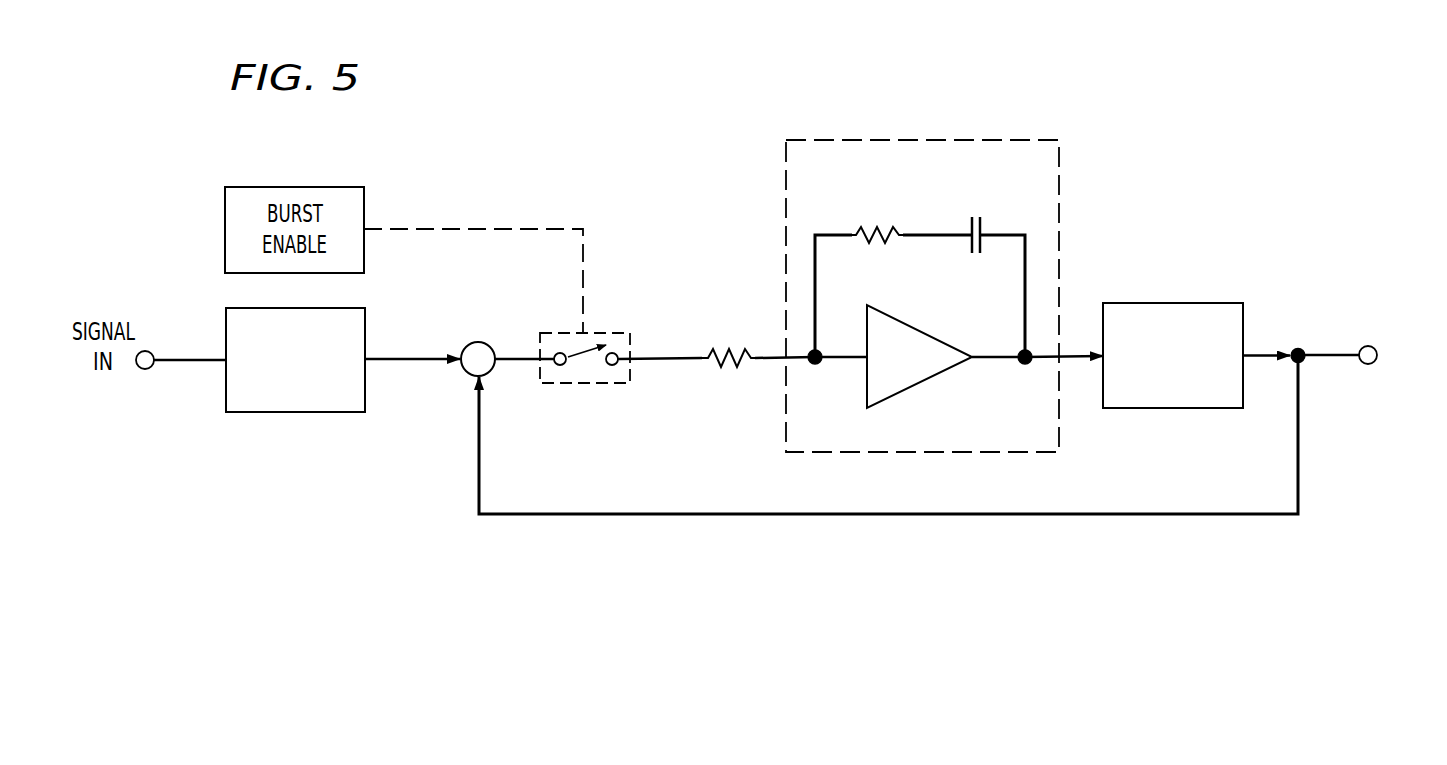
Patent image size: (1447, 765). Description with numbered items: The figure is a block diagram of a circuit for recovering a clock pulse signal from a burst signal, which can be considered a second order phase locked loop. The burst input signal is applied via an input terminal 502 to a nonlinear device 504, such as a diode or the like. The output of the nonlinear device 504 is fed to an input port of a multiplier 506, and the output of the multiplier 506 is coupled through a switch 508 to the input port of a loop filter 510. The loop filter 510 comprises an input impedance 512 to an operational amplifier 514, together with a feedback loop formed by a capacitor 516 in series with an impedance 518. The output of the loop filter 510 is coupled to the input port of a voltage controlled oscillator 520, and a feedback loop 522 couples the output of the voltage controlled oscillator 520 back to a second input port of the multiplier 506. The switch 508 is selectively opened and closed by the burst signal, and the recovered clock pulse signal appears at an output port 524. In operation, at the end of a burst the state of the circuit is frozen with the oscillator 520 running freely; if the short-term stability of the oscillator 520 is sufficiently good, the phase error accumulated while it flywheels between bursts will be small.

The input terminal 502 is at (150, 370).
The nonlinear device 504 is at (305, 412).
The multiplier 506 is at (473, 342).
The switch 508 is at (590, 385).
The loop filter 510 is at (822, 140).
The input impedance 512 is at (728, 370).
The operational amplifier 514 is at (918, 382).
The capacitor 516 is at (982, 218).
The impedance 518 is at (903, 240).
The voltage controlled oscillator 520 is at (1173, 302).
The feedback loop 522 is at (1184, 517).
The output port 524 is at (1363, 346).